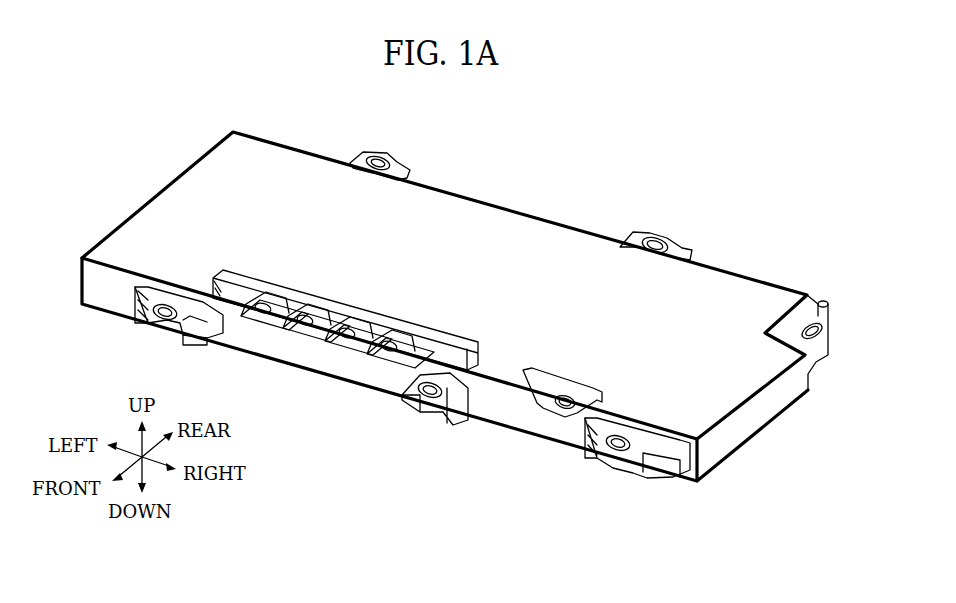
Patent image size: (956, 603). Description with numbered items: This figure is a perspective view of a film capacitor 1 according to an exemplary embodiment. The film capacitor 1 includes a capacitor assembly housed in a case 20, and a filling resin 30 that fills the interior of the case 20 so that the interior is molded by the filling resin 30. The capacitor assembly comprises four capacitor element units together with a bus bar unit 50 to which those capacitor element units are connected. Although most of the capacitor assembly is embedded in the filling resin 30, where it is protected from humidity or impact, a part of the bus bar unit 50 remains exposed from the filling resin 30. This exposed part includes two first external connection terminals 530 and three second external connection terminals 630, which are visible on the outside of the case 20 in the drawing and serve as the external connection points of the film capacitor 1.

The film capacitor 1 is at (537, 190).
The case 20 is at (787, 422).
The filling resin 30 is at (720, 297).
The bus bar unit 50 is at (470, 328).
The first external connection terminal 530 is at (277, 284).
The second external connection terminal 630 is at (325, 297).